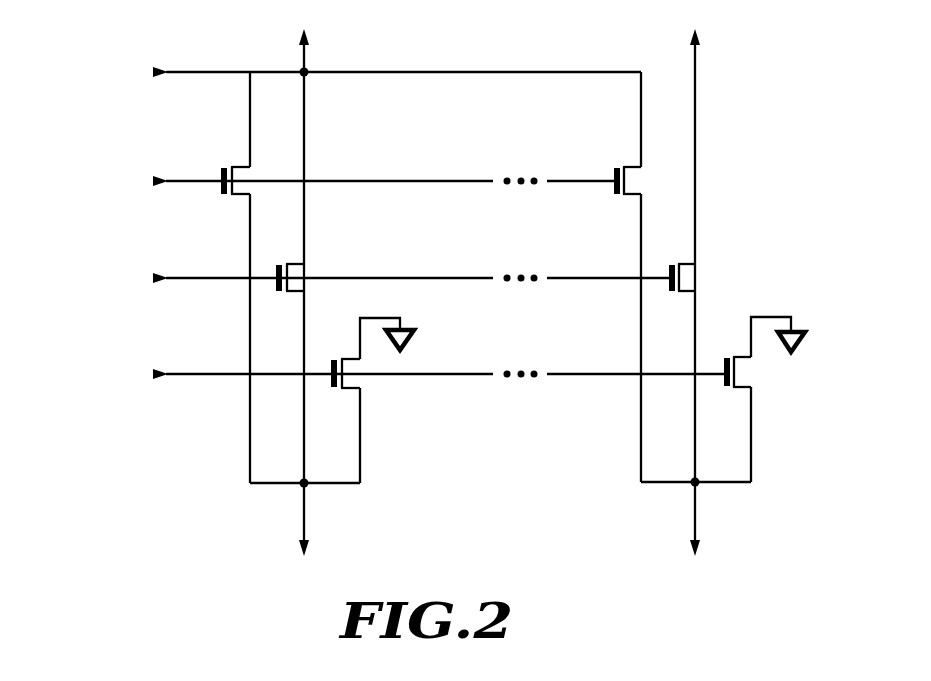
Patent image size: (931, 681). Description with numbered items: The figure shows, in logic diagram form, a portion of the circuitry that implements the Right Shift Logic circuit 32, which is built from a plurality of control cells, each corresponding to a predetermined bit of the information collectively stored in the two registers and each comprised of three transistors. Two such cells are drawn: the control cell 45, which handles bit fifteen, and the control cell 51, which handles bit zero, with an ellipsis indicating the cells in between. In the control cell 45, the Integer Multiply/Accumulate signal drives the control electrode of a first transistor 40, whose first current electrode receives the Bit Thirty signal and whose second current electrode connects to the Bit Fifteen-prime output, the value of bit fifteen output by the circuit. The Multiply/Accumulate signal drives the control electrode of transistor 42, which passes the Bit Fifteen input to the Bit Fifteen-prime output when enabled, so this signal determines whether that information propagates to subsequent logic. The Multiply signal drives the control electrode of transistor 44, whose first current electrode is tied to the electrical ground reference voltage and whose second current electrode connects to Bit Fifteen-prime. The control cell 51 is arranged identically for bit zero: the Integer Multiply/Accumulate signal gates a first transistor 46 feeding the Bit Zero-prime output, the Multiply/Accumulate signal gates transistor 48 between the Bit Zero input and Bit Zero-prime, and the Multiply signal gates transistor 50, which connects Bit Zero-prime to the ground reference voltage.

The Right Shift Logic circuit 32 is at (118, 532).
The first transistor 40 is at (237, 165).
The transistor 42 is at (291, 262).
The transistor 44 is at (346, 358).
The control cell 45 is at (424, 408).
The first transistor 46 is at (630, 165).
The transistor 48 is at (684, 262).
The transistor 50 is at (741, 356).
The control cell 51 is at (789, 406).